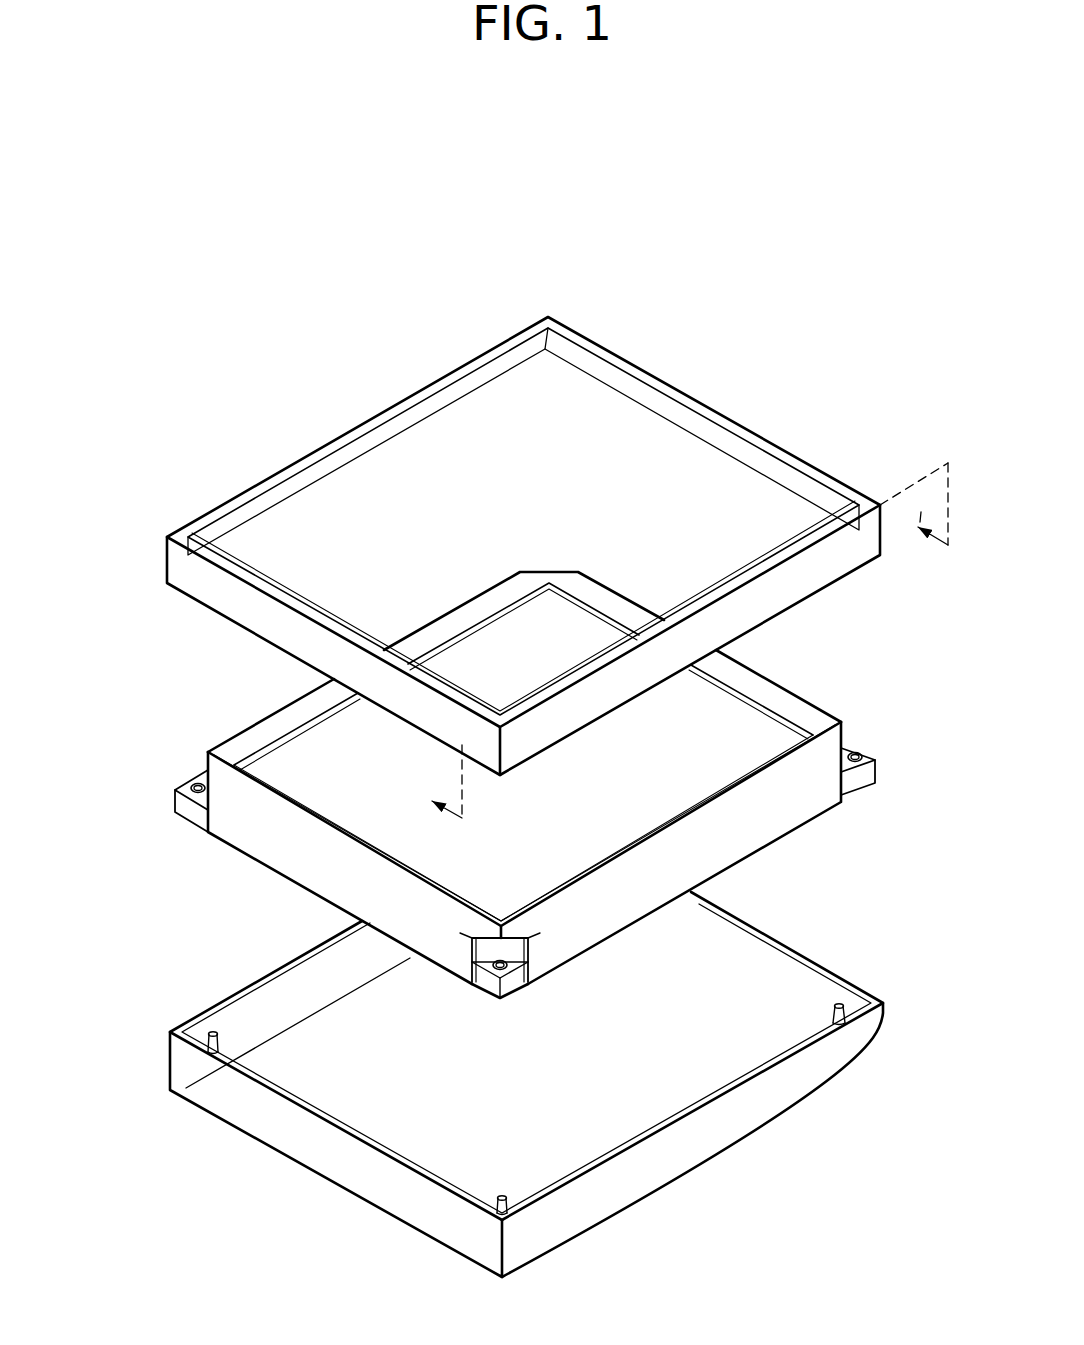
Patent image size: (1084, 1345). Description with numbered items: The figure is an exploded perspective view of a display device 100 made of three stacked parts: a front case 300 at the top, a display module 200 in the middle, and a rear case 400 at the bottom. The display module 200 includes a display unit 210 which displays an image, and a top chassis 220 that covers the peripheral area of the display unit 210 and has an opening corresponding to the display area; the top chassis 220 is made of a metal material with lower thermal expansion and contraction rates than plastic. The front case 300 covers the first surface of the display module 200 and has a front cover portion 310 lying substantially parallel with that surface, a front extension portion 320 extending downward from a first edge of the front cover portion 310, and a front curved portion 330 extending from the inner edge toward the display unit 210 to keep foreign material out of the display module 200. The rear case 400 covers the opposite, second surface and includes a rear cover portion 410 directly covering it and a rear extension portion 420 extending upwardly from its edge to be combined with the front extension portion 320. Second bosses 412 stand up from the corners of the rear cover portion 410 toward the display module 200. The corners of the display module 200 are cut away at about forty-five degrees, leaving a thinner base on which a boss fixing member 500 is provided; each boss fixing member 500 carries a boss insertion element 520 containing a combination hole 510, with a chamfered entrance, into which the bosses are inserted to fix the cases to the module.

The display device 100 is at (596, 248).
The display module 200 is at (230, 873).
The display unit 210 is at (325, 777).
The top chassis 220 is at (283, 722).
The front case 300 is at (150, 548).
The front cover portion 310 is at (297, 467).
The front extension portion 320 is at (195, 585).
The front curved portion 330 is at (380, 435).
The rear case 400 is at (150, 1047).
The rear cover portion 410 is at (382, 1097).
The second boss 412 is at (838, 1003).
The rear extension portion 420 is at (382, 1188).
The boss fixing member 500 is at (873, 795).
The combination hole 510 is at (852, 752).
The boss insertion element 520 is at (866, 760).